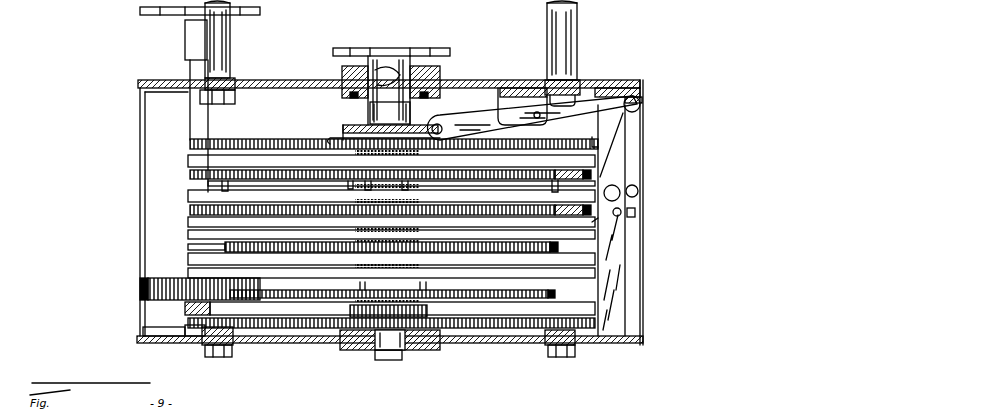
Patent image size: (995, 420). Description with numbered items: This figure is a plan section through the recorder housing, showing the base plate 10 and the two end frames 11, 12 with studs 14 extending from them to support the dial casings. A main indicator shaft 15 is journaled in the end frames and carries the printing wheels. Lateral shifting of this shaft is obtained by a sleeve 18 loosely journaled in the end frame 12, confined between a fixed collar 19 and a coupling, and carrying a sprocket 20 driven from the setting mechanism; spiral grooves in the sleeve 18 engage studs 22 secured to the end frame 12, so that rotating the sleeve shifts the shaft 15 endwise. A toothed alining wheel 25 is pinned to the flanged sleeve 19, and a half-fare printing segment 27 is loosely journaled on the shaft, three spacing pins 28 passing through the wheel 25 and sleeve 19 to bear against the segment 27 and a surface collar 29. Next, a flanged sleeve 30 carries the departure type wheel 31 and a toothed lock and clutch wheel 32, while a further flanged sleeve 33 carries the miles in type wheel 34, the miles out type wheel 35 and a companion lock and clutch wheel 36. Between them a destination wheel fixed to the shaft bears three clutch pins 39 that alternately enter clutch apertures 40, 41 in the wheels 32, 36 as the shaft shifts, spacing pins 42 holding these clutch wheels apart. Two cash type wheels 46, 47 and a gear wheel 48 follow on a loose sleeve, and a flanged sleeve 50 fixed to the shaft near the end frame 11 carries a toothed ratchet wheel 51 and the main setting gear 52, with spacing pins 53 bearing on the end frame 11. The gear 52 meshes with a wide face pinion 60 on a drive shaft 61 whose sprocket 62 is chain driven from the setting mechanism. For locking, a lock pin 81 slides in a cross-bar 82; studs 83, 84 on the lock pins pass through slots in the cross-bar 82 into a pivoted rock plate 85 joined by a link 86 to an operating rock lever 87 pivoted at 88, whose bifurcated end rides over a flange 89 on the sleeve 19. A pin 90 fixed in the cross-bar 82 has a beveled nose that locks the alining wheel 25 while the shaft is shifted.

The base plate 10 is at (643, 296).
The end frame 11 is at (525, 343).
The end frame 12 is at (275, 80).
The studs 14 is at (230, 62).
The main indicator shaft 15 is at (400, 355).
The sleeve 18 is at (384, 62).
The collar 19 is at (343, 130).
The sprocket 20 is at (450, 52).
The studs 22 is at (342, 84).
The toothed alining wheel 25 is at (188, 143).
The half-fare printing segment 27 is at (330, 140).
The spacing pins 28 is at (375, 121).
The surface collar 29 is at (350, 97).
The flanged sleeve 30 is at (205, 184).
The departure type wheel 31 is at (188, 160).
The toothed lock and clutch wheel 32 is at (188, 173).
The flanged sleeve 33 is at (188, 196).
The miles in type wheel 34 is at (188, 222).
The miles out type wheel 35 is at (188, 234).
The toothed lock and clutch wheel 36 is at (188, 210).
The clutch pins 39 is at (365, 187).
The clutch apertures 40 is at (580, 184).
The clutch apertures 41 is at (598, 218).
The spacing pins 42 is at (350, 186).
The cash type wheel 46 is at (188, 258).
The cash type wheel 47 is at (188, 268).
The gear wheel 48 is at (188, 246).
The flanged sleeve 50 is at (427, 311).
The toothed ratchet wheel 51 is at (565, 320).
The setting gear 52 is at (556, 300).
The spacing pins 53 is at (360, 287).
The wide face pinion 60 is at (140, 288).
The drive shaft 61 is at (208, 125).
The sprocket 62 is at (168, 14).
The lock pin 81 is at (636, 213).
The cross-bar 82 is at (615, 257).
The stud 83 is at (618, 170).
The stud 84 is at (610, 172).
The pivoted rock plate 85 is at (638, 196).
The link 86 is at (626, 172).
The operating rock lever 87 is at (485, 125).
The pivot 88 is at (537, 112).
The flange 89 is at (352, 125).
The pin 90 is at (592, 142).